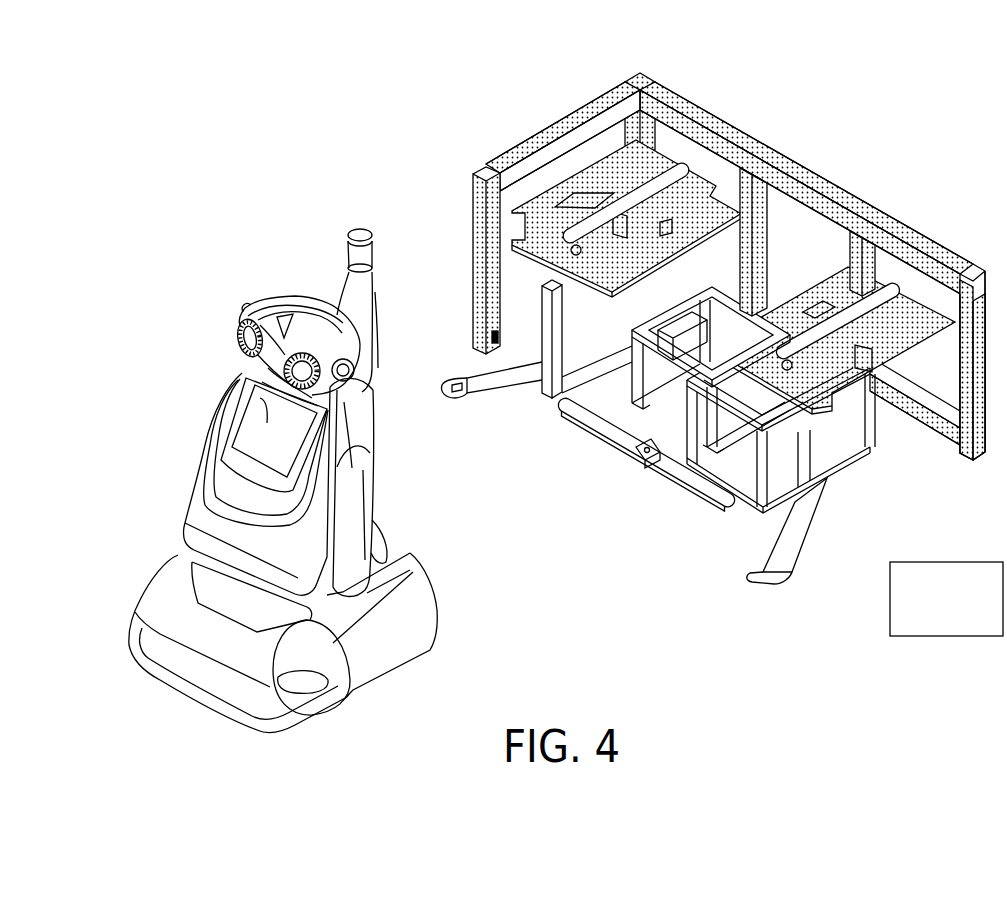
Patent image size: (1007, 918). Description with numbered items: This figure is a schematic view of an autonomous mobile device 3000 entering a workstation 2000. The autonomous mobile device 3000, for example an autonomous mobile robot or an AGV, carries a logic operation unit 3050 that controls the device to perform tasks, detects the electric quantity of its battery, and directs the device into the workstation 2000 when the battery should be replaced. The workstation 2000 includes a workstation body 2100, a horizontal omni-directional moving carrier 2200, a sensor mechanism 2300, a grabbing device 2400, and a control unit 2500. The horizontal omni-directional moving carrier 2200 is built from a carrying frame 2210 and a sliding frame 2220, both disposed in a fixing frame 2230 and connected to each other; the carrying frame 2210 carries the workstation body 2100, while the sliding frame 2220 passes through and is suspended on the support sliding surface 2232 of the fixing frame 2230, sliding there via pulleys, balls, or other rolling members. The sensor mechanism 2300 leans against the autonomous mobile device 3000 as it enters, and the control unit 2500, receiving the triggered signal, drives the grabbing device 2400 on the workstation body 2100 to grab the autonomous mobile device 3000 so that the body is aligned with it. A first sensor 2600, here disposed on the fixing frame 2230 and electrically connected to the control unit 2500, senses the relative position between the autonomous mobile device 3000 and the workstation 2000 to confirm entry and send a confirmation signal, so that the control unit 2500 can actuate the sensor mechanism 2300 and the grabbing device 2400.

The workstation 2000 is at (686, 351).
The workstation body 2100 is at (640, 362).
The horizontal omni-directional moving carrier 2200 is at (599, 41).
The carrying frame 2210 is at (543, 297).
The sliding frame 2220 is at (653, 180).
The fixing frame 2230 is at (553, 132).
The support sliding surface 2232 is at (530, 212).
The sensor mechanism 2300 is at (597, 426).
The grabbing device 2400 is at (783, 558).
The control unit 2500 is at (943, 437).
The first sensor 2600 is at (477, 346).
The autonomous mobile device 3000 is at (282, 481).
The logic operation unit 3050 is at (268, 423).